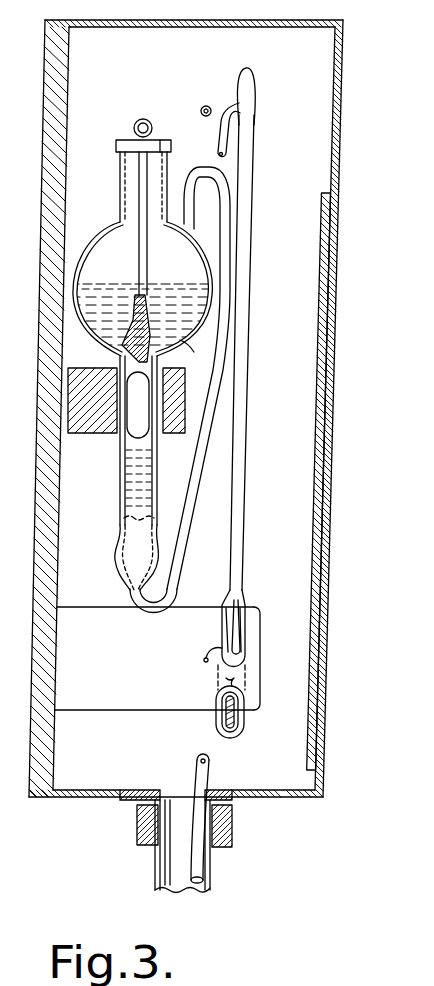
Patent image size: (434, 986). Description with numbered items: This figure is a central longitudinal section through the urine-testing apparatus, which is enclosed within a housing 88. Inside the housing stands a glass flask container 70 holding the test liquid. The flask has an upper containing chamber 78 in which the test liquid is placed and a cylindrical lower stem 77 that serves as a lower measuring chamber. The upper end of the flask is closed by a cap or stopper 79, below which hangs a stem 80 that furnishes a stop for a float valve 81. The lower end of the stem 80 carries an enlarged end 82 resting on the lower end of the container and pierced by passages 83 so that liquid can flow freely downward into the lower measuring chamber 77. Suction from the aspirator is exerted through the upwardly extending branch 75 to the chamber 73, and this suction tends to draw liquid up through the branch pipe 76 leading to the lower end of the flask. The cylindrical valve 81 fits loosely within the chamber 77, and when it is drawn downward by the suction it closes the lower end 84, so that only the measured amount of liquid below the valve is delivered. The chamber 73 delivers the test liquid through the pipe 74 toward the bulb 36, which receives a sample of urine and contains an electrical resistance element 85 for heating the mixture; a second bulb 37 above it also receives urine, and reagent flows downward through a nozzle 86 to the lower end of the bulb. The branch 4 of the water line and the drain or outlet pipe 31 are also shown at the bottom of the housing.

The housing 88 is at (343, 118).
The cap or stopper 79 is at (153, 140).
The container 70 is at (104, 240).
The upper containing chamber 78 is at (180, 262).
The stem 80 is at (138, 228).
The enlarged end 82 is at (123, 347).
The passages 83 is at (182, 342).
The float valve 81 is at (121, 445).
The cylindrical lower stem 77 is at (121, 531).
The lower end 84 is at (131, 578).
The branch pipe 76 is at (212, 376).
The chamber 73 is at (248, 197).
The upwardly extending branch 75 is at (218, 140).
The pipe 74 is at (243, 475).
The nozzle 86 is at (232, 634).
The second bulb 37 is at (236, 662).
The bulb 36 is at (246, 723).
The electrical resistance element 85 is at (236, 710).
The branch 4 is at (206, 786).
The drain or outlet pipe 31 is at (212, 861).